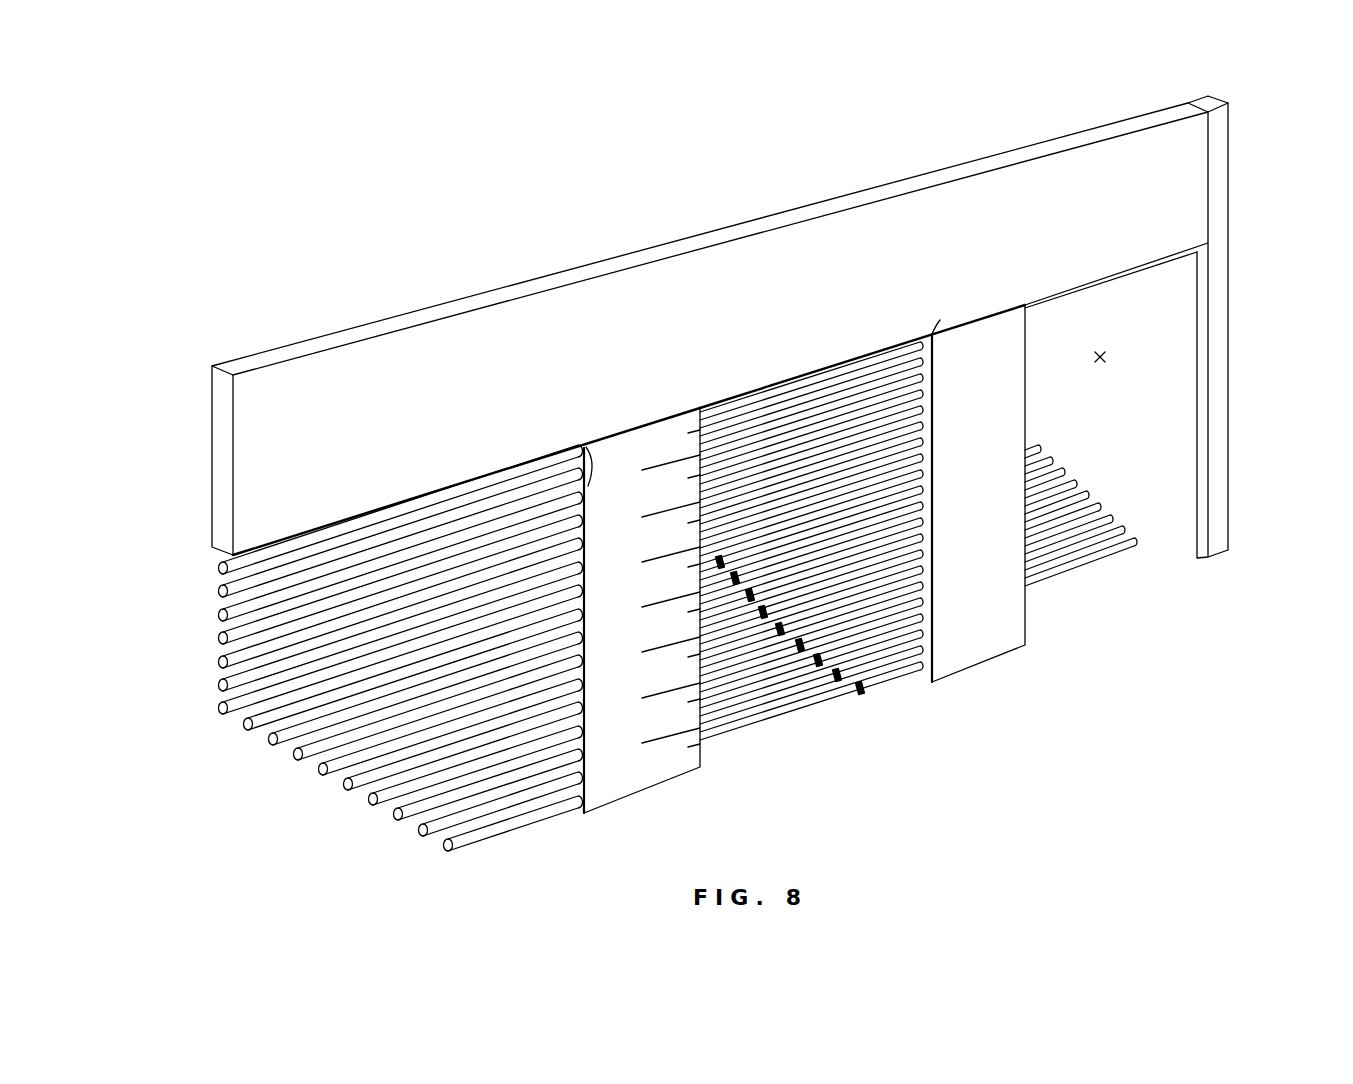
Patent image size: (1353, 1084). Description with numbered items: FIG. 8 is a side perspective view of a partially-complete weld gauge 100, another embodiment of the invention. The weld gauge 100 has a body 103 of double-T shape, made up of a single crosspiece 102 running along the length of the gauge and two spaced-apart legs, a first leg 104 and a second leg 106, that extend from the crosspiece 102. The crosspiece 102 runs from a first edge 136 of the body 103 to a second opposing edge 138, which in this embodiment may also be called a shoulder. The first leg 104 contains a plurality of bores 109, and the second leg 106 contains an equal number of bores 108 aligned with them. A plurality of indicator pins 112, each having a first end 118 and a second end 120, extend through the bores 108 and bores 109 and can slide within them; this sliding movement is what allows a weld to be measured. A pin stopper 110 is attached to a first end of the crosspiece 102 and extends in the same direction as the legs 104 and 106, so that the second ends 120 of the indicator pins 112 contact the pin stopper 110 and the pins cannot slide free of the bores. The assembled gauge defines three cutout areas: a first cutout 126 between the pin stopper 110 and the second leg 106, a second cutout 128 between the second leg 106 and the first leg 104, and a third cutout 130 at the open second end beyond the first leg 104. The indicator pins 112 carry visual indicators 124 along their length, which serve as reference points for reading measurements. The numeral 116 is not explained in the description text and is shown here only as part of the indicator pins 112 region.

The weld gauge 100 is at (518, 209).
The crosspiece 102 is at (920, 220).
The body 103 is at (345, 335).
The first leg 104 is at (610, 772).
The second leg 106 is at (975, 635).
The bores 108 is at (927, 343).
The bores 109 is at (584, 455).
The pin stopper 110 is at (1225, 350).
The indicator pins 112 is at (297, 770).
The tube sections 116 is at (695, 745).
The first end 118 is at (218, 683).
The second end 120 is at (1137, 586).
The visual indicators 124 is at (860, 691).
The first cutout 126 is at (1100, 355).
The second cutout 128 is at (793, 377).
The third cutout 130 is at (413, 497).
The first edge 136 is at (1208, 185).
The second opposing edge 138 is at (212, 468).